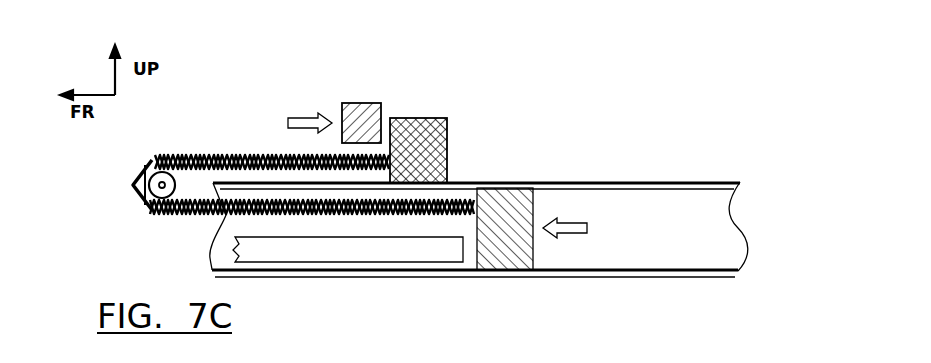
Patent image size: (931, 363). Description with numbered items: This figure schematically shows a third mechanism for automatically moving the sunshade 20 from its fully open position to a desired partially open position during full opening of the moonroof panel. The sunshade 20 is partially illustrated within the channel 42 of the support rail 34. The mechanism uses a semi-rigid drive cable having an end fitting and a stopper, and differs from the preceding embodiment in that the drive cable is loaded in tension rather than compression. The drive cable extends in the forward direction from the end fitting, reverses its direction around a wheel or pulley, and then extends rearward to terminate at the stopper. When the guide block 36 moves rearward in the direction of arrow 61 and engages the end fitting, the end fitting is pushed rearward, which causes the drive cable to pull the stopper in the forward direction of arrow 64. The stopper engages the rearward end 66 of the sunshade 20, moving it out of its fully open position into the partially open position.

The sunshade 20 is at (298, 253).
The support rail 34 is at (728, 278).
The guide block 36 is at (358, 102).
The channel 42 is at (680, 250).
The arrow 61 is at (305, 114).
The arrow 64 is at (568, 237).
The rearward end 66 is at (448, 253).